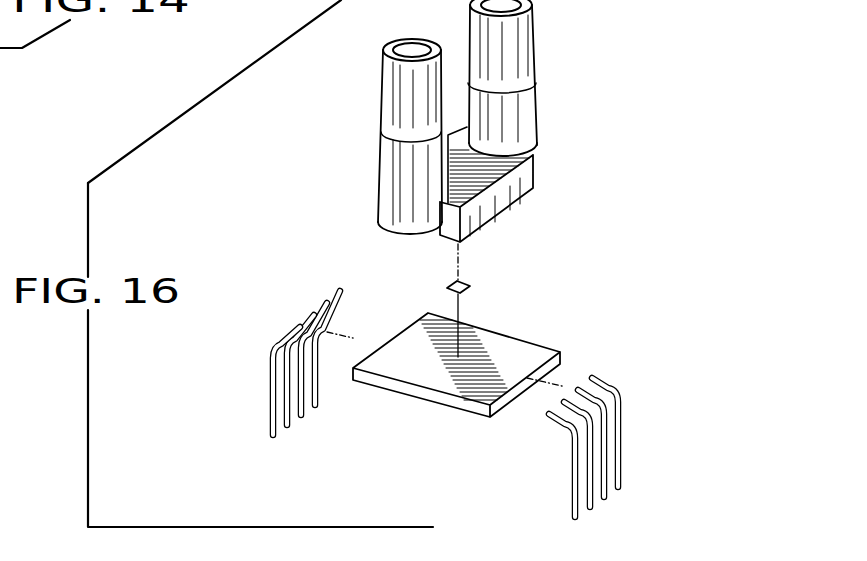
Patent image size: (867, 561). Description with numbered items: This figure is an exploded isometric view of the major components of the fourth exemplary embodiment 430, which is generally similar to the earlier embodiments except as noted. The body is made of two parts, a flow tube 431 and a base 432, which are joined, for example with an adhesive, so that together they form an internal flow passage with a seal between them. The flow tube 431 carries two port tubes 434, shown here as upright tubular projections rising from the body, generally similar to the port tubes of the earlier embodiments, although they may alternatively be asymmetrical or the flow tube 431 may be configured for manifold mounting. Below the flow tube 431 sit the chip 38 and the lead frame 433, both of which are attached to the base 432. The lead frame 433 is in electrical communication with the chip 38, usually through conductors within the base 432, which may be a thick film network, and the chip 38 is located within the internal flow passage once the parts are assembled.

The fourth exemplary embodiment 430 is at (358, 125).
The flow tube 431 is at (527, 178).
The port tubes 434 is at (379, 157).
The chip 38 is at (472, 291).
The base 432 is at (415, 392).
The lead frame 433 is at (288, 427).